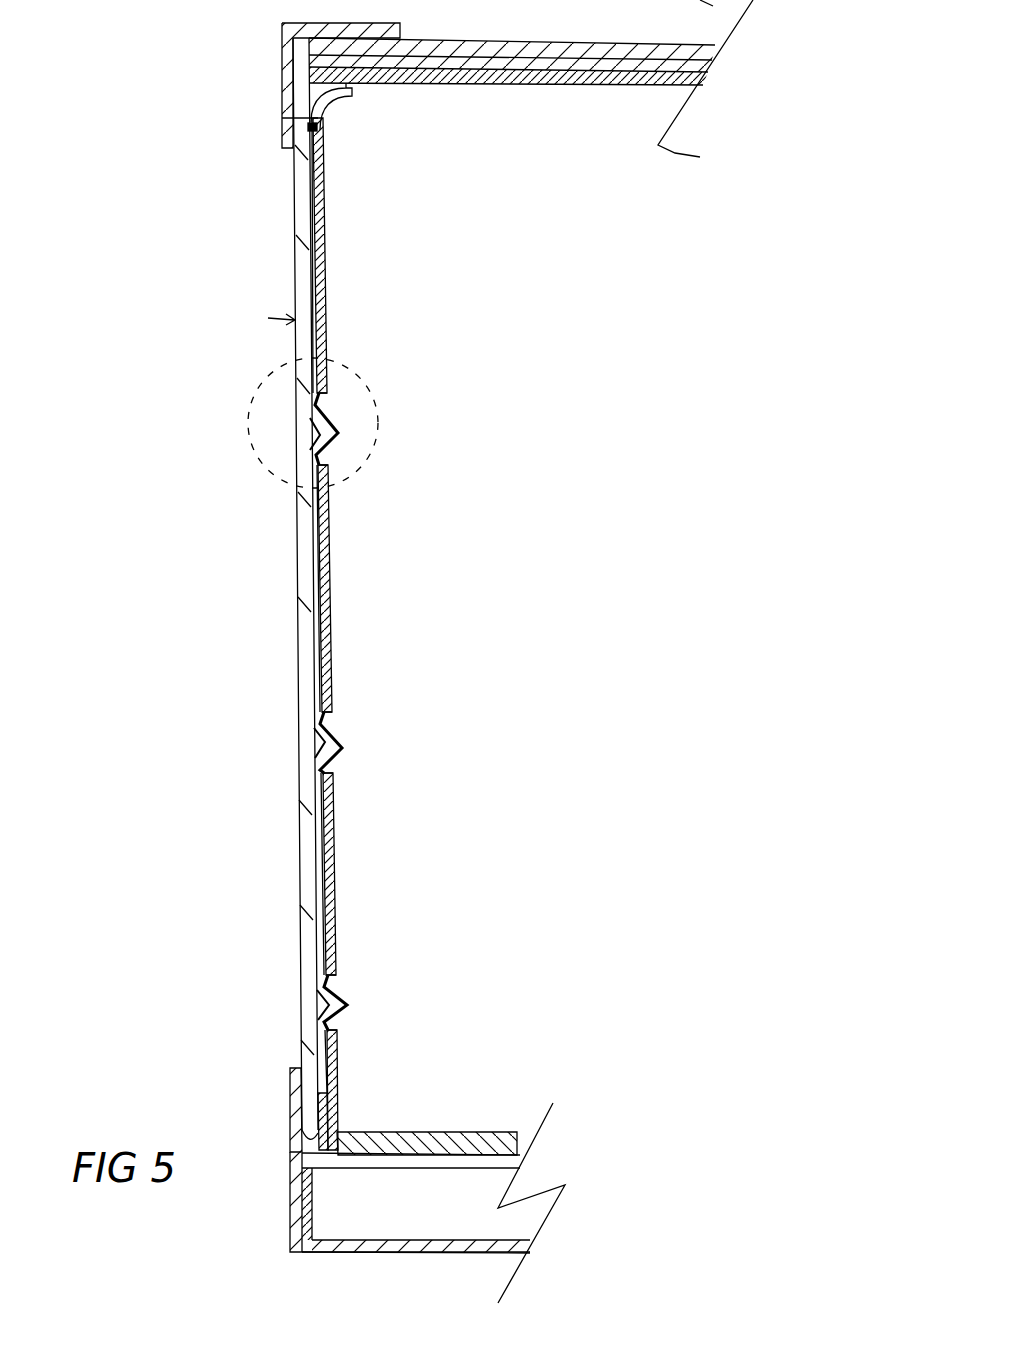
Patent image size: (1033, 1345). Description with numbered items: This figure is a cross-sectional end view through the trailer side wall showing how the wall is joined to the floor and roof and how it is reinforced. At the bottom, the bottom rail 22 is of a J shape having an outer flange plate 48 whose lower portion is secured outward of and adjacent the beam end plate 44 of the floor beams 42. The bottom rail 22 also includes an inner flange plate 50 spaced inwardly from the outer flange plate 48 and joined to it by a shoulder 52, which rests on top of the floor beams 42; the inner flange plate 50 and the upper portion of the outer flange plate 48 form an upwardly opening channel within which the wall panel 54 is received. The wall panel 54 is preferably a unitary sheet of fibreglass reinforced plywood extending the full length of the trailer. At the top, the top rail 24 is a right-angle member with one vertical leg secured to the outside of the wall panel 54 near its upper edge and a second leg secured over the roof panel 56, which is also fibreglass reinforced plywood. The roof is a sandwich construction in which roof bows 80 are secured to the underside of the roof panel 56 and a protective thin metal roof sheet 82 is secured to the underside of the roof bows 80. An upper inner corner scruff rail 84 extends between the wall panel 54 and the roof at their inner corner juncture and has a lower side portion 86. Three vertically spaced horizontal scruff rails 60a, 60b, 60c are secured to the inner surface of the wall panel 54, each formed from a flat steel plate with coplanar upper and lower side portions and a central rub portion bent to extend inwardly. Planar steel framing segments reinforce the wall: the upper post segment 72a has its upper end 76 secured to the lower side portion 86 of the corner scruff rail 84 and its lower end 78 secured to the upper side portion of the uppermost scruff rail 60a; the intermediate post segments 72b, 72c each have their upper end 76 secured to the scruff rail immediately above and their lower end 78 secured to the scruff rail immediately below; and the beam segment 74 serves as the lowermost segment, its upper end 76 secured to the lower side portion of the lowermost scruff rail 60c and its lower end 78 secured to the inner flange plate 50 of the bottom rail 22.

The bottom rail 22 is at (276, 1194).
The top rail 24 is at (270, 51).
The floor beams 42 is at (423, 1253).
The beam end plate 44 is at (313, 1210).
The outer flange plate 48 is at (290, 1113).
The inner flange plate 50 is at (345, 1114).
The shoulder 52 is at (310, 1143).
The wall panel 54 is at (297, 650).
The roof panel 56 is at (715, 54).
The uppermost scruff rail 60a is at (360, 420).
The intermediate scruff rail 60b is at (367, 742).
The lowermost scruff rail 60c is at (365, 1000).
The upper post segment 72a is at (341, 254).
The intermediate post segment 72b is at (346, 603).
The intermediate post segment 72c is at (349, 883).
The beam segment 74 is at (352, 1099).
The upper end 76 is at (329, 130).
The lower end 78 is at (327, 397).
The roof bows 80 is at (708, 70).
The roof sheet 82 is at (700, 88).
The upper inner corner scruff rail 84 is at (334, 92).
The lower side portion 86 is at (282, 120).